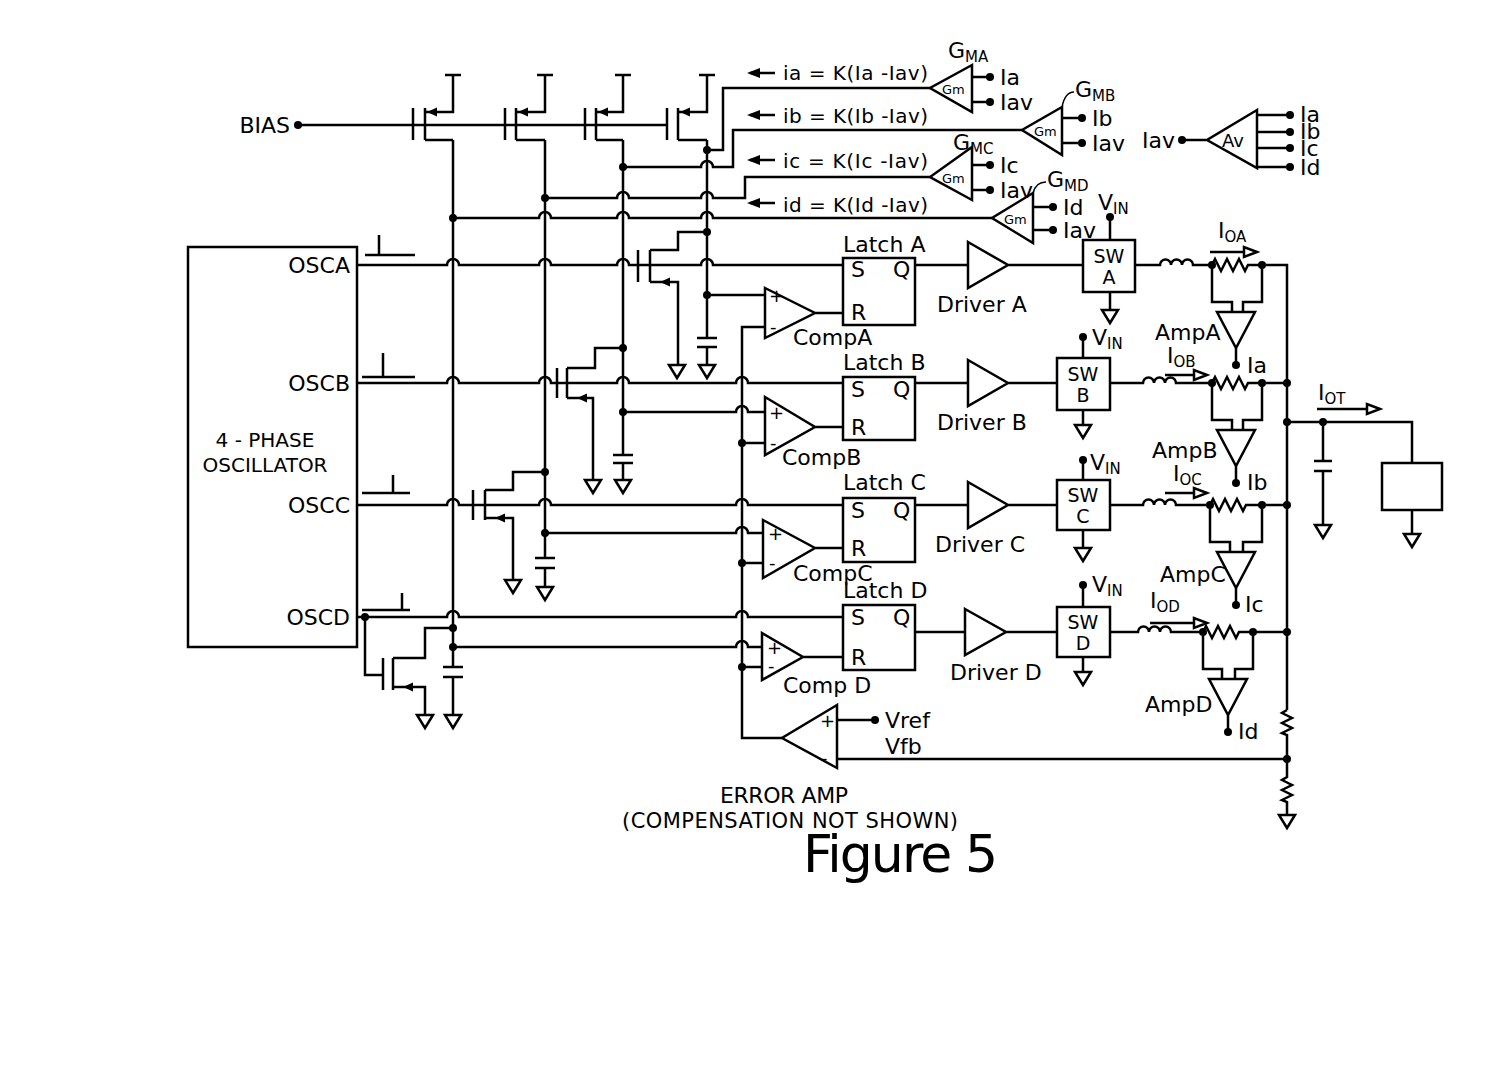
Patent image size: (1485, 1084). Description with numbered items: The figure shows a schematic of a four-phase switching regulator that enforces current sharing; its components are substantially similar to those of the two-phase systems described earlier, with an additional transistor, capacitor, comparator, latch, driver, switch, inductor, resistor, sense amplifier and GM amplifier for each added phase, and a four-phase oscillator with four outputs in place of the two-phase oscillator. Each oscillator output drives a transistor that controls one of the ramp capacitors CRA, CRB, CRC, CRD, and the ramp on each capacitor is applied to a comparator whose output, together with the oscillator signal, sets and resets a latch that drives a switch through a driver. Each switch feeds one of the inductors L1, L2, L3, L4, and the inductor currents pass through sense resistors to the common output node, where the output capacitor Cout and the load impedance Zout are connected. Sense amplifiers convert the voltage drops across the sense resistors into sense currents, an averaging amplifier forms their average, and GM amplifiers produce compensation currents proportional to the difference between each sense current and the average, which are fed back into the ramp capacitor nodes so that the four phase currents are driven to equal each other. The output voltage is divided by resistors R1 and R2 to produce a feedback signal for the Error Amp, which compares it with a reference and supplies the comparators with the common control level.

The inductor L1 is at (1173, 245).
The inductor L2 is at (1161, 397).
The inductor L3 is at (1160, 520).
The inductor L4 is at (1156, 646).
The resistor R1 is at (1302, 734).
The resistor R2 is at (1301, 793).
The capacitor CRA is at (731, 334).
The capacitor CRB is at (689, 450).
The capacitor CRC is at (649, 563).
The capacitor CRD is at (602, 684).
The capacitor Cout is at (1341, 478).
The output load impedance Zout is at (1412, 505).